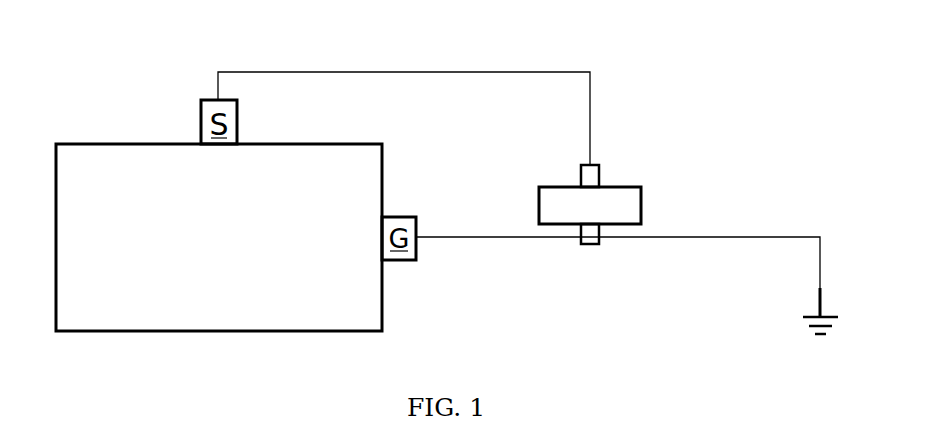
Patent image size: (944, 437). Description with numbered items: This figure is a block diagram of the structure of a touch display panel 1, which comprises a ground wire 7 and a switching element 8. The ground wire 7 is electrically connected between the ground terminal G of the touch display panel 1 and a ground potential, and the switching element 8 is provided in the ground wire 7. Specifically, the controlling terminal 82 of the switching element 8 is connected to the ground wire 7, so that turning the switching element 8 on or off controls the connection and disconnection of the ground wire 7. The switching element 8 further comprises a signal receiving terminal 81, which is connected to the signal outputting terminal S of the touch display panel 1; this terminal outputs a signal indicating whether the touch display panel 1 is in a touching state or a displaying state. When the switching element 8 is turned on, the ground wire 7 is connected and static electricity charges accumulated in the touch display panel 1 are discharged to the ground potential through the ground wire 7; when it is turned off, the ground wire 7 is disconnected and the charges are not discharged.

The touch display panel 1 is at (212, 254).
The ground wire 7 is at (491, 254).
The switching element 8 is at (583, 220).
The signal receiving terminal 81 is at (600, 178).
The controlling terminal 82 is at (590, 245).